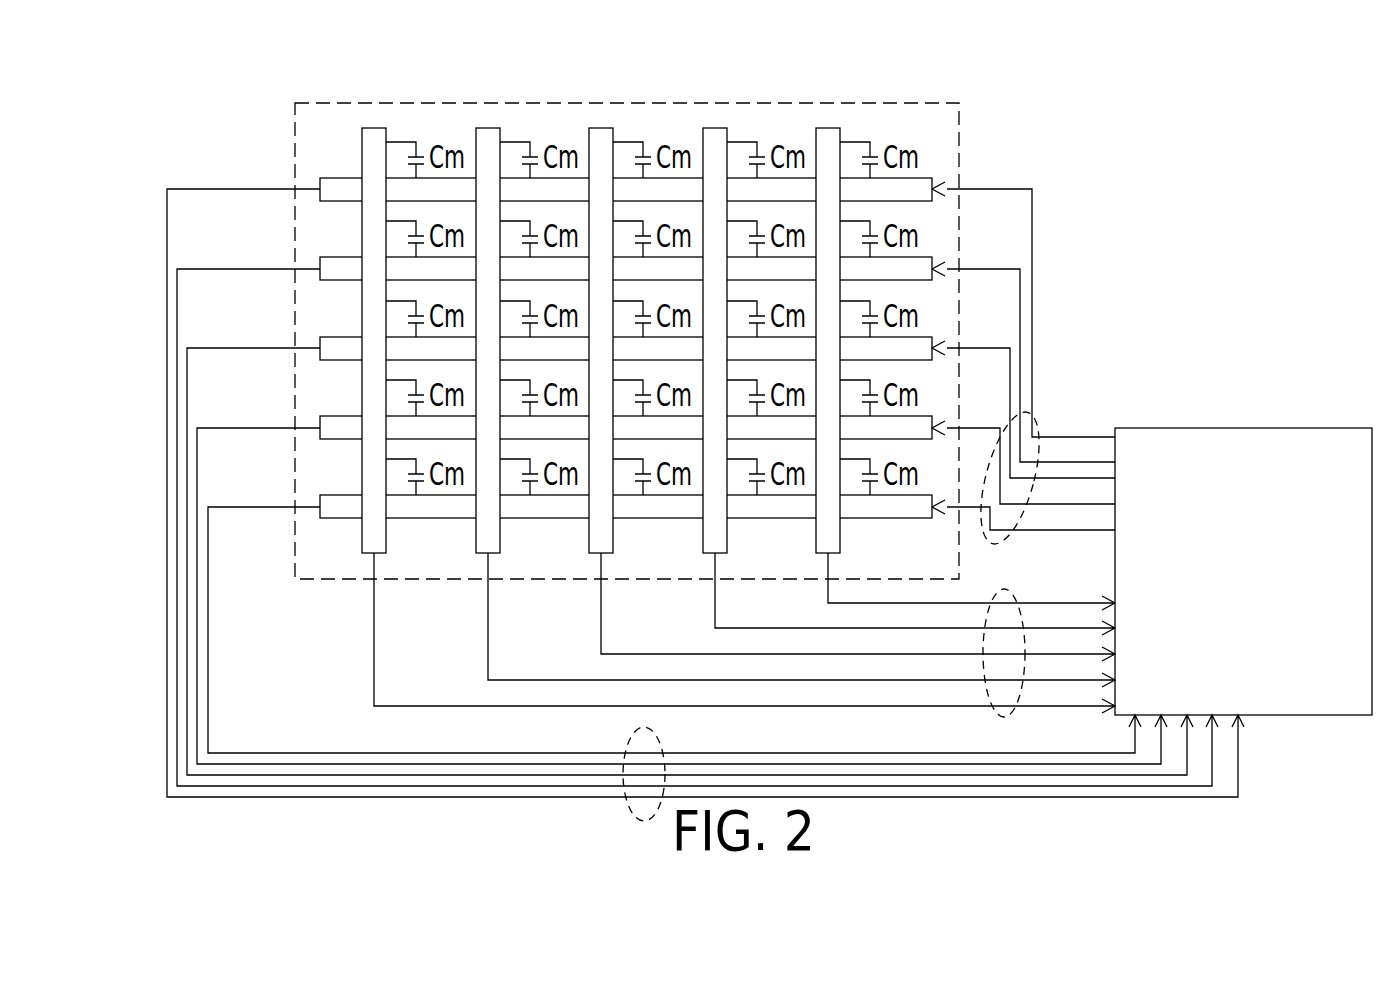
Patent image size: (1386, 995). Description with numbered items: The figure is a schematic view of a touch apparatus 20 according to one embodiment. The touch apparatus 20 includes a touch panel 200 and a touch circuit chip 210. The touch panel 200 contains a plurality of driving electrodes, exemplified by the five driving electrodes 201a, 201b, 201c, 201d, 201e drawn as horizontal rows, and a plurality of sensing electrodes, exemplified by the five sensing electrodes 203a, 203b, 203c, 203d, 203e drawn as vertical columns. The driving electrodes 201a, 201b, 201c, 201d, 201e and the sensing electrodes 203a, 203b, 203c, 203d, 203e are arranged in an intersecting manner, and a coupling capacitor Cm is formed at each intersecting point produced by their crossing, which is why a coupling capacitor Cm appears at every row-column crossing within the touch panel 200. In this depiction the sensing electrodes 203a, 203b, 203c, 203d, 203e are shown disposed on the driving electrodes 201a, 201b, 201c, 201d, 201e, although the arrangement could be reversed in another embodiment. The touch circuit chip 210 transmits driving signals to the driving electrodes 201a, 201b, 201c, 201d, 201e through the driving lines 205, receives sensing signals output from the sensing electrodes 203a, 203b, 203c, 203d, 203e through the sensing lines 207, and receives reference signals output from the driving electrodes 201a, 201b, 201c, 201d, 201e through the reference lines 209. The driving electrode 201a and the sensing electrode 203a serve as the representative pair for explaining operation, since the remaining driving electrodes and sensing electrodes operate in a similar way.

The touch apparatus 20 is at (1102, 145).
The touch panel 200 is at (960, 146).
The driving electrode 201a is at (333, 178).
The driving electrode 201b is at (333, 257).
The driving electrode 201c is at (333, 337).
The driving electrode 201d is at (333, 416).
The driving electrode 201e is at (333, 495).
The sensing electrode 203a is at (375, 128).
The sensing electrode 203b is at (489, 128).
The sensing electrode 203c is at (602, 128).
The sensing electrode 203d is at (716, 128).
The sensing electrode 203e is at (829, 128).
The driving lines 205 is at (1040, 418).
The sensing lines 207 is at (990, 712).
The reference lines 209 is at (620, 752).
The touch circuit chip 210 is at (1269, 591).
The coupling capacitor Cm is at (652, 316).